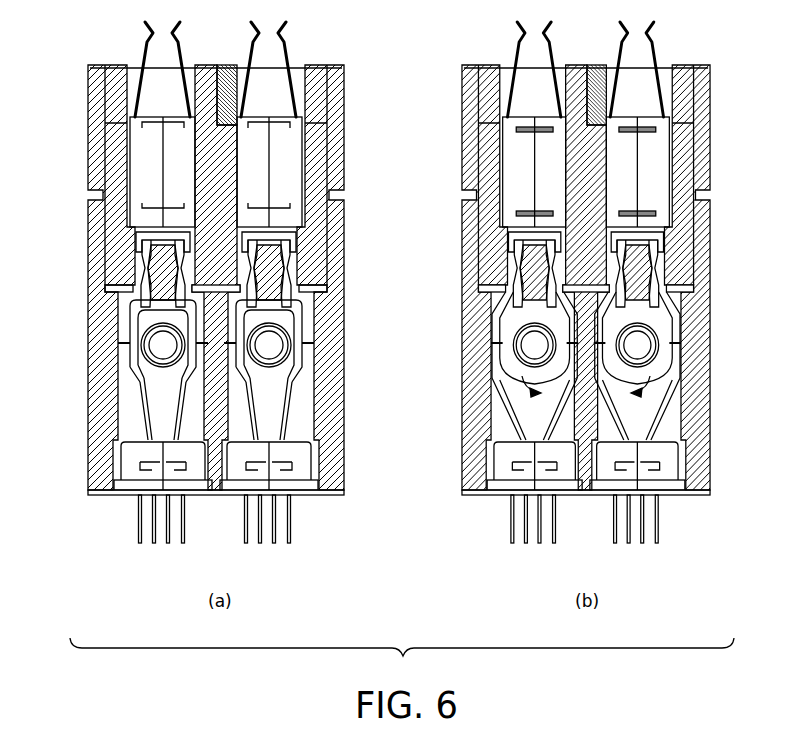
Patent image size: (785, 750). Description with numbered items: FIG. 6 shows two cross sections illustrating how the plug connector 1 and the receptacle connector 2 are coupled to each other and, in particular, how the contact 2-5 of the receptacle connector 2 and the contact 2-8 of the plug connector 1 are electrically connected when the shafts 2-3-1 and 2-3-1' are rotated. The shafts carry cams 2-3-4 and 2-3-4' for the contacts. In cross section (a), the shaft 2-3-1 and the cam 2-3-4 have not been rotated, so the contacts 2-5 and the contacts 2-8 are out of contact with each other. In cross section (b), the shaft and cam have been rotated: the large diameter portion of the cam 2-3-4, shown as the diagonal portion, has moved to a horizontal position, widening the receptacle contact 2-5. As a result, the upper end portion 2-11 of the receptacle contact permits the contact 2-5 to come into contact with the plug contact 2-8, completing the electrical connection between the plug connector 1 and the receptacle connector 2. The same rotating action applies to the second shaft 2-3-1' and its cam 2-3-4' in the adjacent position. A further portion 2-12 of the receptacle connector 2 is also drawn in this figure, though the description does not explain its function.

The plug connector 1 is at (344, 84).
The receptacle connector 2 is at (97, 482).
The contact of the plug connector 2-8 is at (88, 187).
The side wall member 2-12 is at (315, 247).
The upper end portion 2-11 is at (308, 273).
The contact of the receptacle 2-5 is at (155, 420).
The cam 2-3-4 is at (506, 338).
The shaft 2-3-1 is at (507, 336).
The cam 2-3-4' is at (300, 339).
The shaft 2-3-1' is at (292, 391).